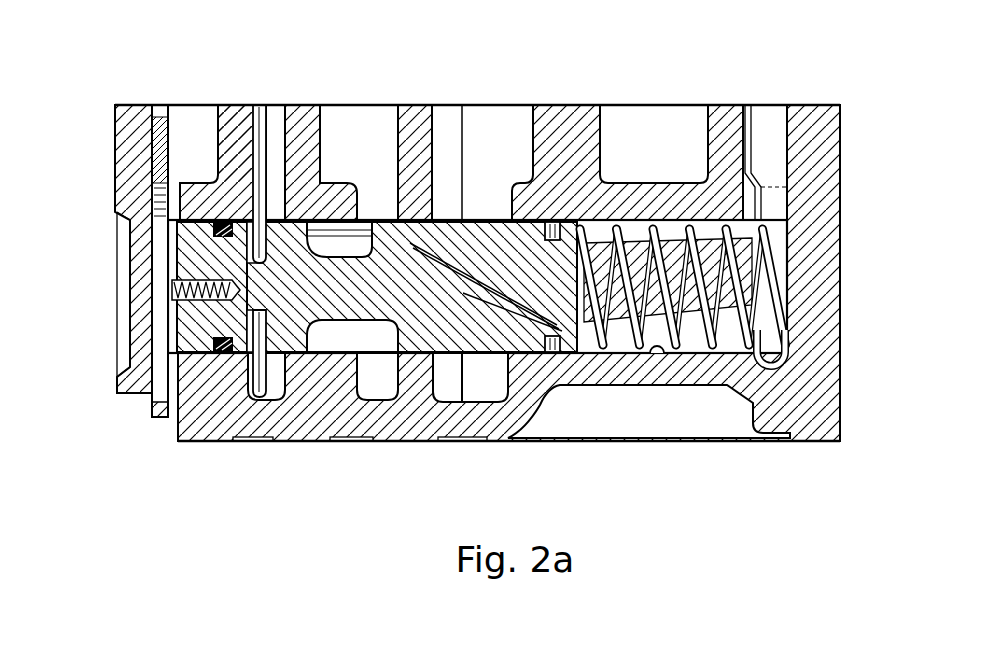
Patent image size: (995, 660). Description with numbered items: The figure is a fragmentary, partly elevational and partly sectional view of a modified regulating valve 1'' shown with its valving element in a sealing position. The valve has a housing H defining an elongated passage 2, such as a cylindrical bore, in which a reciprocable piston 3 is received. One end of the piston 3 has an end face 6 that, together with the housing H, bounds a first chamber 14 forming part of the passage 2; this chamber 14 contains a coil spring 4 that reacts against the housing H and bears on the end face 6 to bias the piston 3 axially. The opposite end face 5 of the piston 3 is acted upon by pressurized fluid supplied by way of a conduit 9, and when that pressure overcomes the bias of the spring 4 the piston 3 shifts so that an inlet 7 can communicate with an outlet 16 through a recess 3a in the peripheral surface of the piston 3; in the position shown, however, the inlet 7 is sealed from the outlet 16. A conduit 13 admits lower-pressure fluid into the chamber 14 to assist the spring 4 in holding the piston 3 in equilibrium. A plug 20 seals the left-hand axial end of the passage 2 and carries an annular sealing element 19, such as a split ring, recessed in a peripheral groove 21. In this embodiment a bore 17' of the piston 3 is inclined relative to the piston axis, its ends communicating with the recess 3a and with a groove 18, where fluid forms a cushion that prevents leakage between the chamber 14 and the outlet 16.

The valve 1'' is at (477, 359).
The housing H is at (708, 100).
The passage 2 is at (662, 353).
The piston 3 is at (343, 345).
The recess 3a is at (345, 440).
The spring 4 is at (770, 282).
The end face 5 is at (257, 243).
The end face 6 is at (577, 357).
The inlet 7 is at (365, 105).
The conduit 9 is at (272, 105).
The conduit 13 is at (770, 105).
The first chamber 14 is at (742, 236).
The outlet 16 is at (487, 105).
The bore 17' is at (486, 368).
The groove 18 is at (553, 222).
The annular sealing element 19 is at (222, 350).
The plug 20 is at (182, 330).
The peripheral groove 21 is at (222, 105).